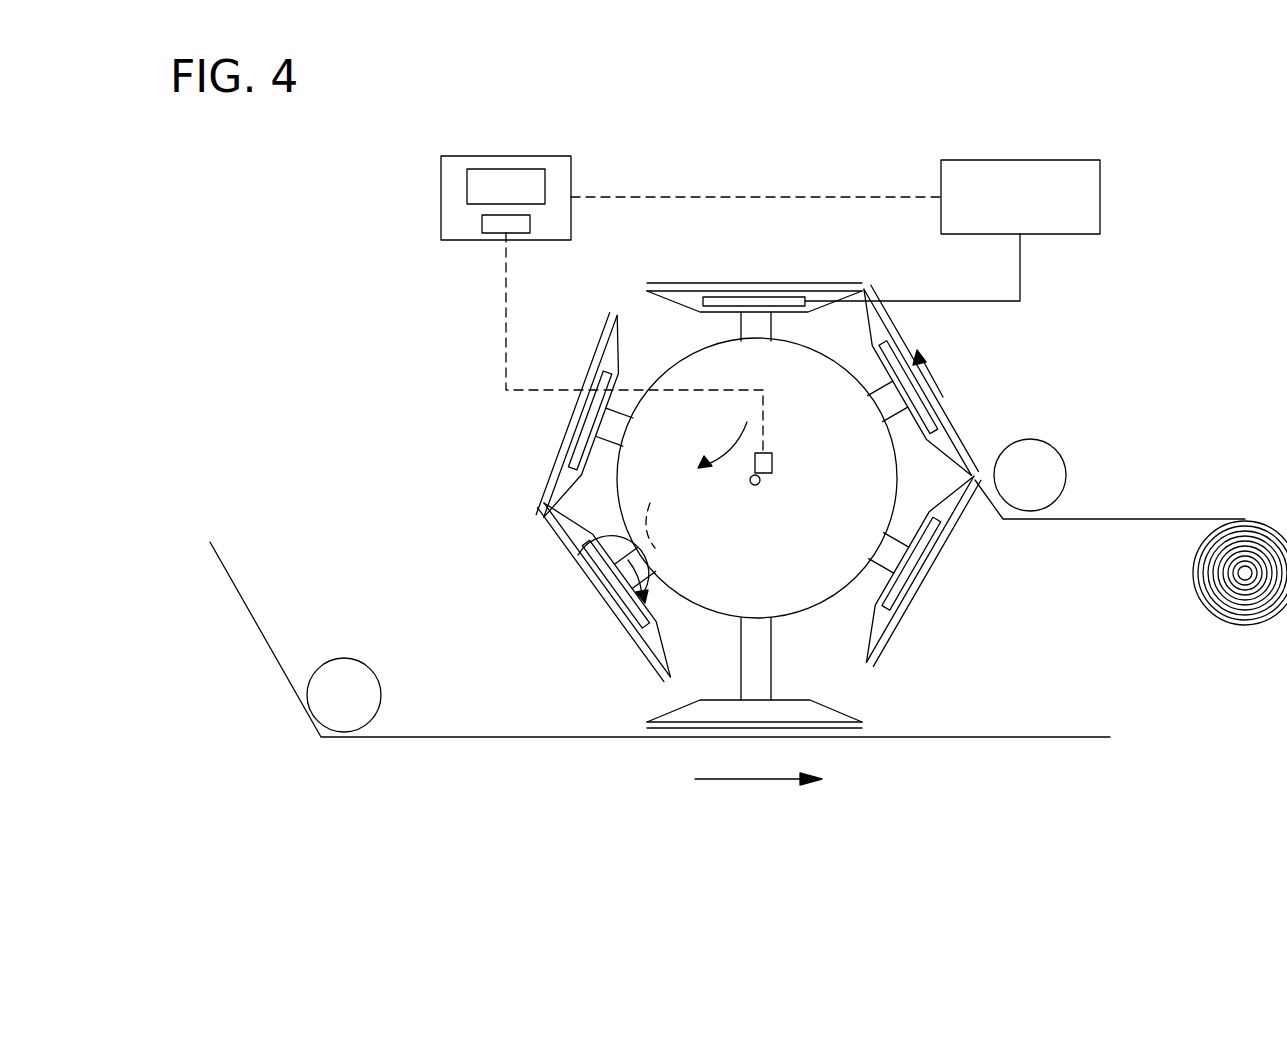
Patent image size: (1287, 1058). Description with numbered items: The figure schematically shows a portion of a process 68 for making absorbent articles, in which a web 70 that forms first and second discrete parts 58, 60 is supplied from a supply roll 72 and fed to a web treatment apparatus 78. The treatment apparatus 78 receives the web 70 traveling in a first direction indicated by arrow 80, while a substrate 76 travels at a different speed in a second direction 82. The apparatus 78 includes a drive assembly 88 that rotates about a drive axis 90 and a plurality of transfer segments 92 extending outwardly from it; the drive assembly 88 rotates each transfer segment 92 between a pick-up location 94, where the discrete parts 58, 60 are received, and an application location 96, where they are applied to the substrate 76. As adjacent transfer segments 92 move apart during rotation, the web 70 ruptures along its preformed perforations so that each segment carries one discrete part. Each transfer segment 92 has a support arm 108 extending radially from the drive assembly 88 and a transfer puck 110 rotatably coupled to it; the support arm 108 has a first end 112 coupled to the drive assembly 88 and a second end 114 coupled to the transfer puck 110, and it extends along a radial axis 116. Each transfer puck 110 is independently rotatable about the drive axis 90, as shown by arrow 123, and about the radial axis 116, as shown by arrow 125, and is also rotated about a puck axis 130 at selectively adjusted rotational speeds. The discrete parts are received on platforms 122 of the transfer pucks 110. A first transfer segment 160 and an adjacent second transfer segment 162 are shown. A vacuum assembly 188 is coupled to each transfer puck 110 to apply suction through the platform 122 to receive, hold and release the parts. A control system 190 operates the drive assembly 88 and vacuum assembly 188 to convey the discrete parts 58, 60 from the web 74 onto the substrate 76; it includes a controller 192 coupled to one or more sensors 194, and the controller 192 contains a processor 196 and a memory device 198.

The first discrete part 58 is at (760, 283).
The second discrete part 60 is at (912, 343).
The process 68 is at (868, 138).
The web 70 is at (1165, 519).
The supply roll 72 is at (1245, 628).
The web 74 is at (1118, 519).
The substrate 76 is at (440, 737).
The web treatment apparatus 78 is at (458, 479).
The arrow 80 is at (940, 393).
The second direction 82 is at (758, 781).
The drive assembly 88 is at (810, 606).
The drive axis 90 is at (761, 481).
The transfer segment 92 is at (690, 292).
The pick-up location 94 is at (988, 440).
The application location 96 is at (748, 741).
The support arm 108 is at (741, 326).
The transfer puck 110 is at (835, 291).
The first end 112 is at (648, 562).
The second end 114 is at (590, 622).
The radial axis 116 is at (662, 510).
The platform 122 is at (935, 565).
The arrow 123 is at (728, 432).
The arrow 125 is at (562, 560).
The puck axis 130 is at (758, 487).
The first transfer segment 160 is at (555, 420).
The second transfer segment 162 is at (560, 470).
The vacuum assembly 188 is at (1063, 160).
The control system 190 is at (582, 156).
The controller 192 is at (482, 156).
The sensor 194 is at (772, 455).
The processor 196 is at (467, 186).
The memory device 198 is at (483, 226).